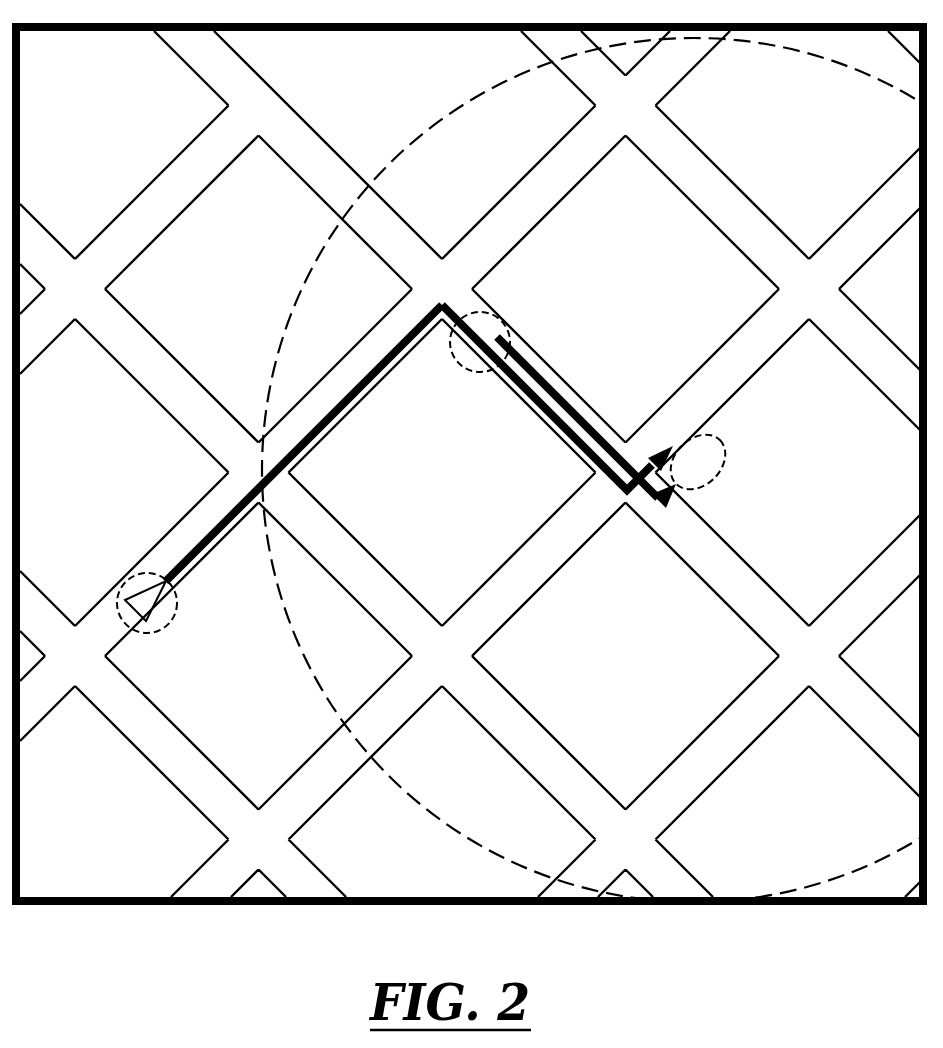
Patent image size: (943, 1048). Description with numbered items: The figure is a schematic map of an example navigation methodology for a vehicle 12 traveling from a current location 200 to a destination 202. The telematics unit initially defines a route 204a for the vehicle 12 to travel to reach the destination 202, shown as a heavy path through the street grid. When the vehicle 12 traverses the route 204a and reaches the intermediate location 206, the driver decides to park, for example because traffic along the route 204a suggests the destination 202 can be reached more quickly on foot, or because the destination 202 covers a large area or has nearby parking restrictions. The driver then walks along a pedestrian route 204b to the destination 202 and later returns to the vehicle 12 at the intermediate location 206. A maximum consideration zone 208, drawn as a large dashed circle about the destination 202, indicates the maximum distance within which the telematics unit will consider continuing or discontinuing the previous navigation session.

The vehicle 12 is at (148, 584).
The current location 200 is at (165, 627).
The destination 202 is at (717, 468).
The route 204a is at (309, 448).
The pedestrian route 204b is at (545, 381).
The intermediate location 206 is at (467, 368).
The maximum consideration zone 208 is at (422, 807).